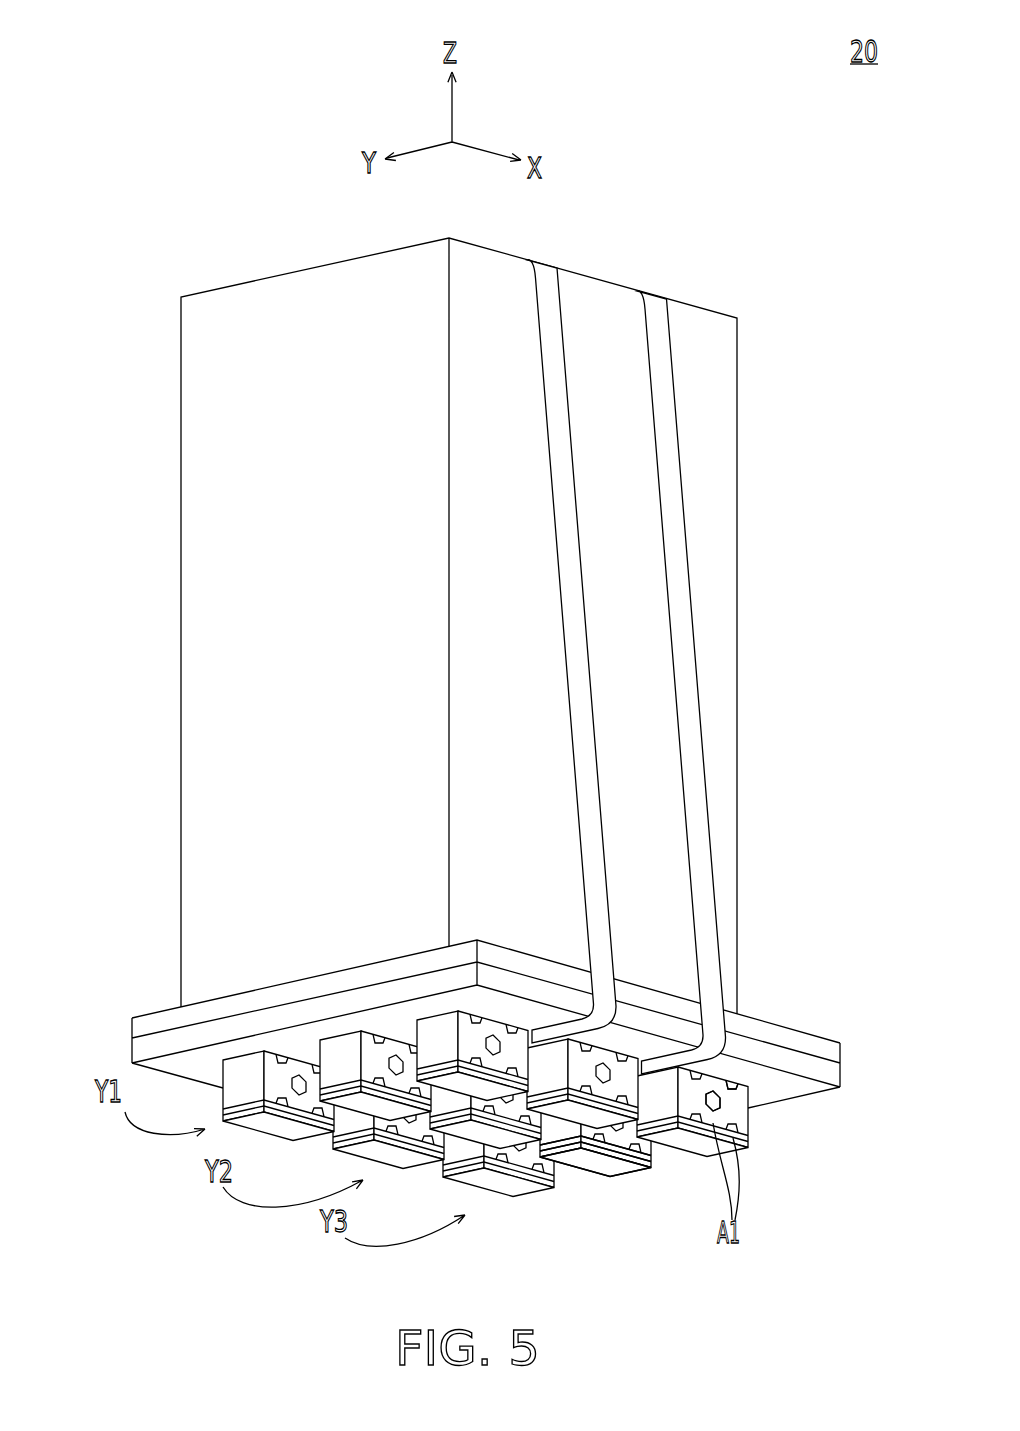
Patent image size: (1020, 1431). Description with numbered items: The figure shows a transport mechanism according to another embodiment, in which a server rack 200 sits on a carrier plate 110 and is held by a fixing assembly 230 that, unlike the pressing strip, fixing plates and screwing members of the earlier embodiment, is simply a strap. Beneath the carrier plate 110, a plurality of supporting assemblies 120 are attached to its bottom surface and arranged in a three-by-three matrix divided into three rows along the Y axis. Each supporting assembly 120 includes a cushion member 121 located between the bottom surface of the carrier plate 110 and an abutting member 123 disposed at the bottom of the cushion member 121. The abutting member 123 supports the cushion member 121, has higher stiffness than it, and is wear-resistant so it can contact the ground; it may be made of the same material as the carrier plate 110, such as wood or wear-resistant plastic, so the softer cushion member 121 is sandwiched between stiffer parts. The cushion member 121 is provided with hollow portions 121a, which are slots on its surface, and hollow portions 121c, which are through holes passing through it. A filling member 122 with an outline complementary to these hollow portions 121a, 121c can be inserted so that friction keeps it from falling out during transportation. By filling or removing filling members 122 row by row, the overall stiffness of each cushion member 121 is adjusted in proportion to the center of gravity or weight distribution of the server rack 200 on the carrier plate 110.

The carrier plate 110 is at (772, 1030).
The supporting assembly 120 is at (459, 676).
The cushion member 121 is at (403, 647).
The hollow portion 121a is at (737, 1074).
The hollow portion 121c is at (715, 1103).
The filling member 122 is at (381, 598).
The abutting member 123 is at (607, 1172).
The server rack 200 is at (722, 437).
The fixing assembly 230 is at (657, 333).